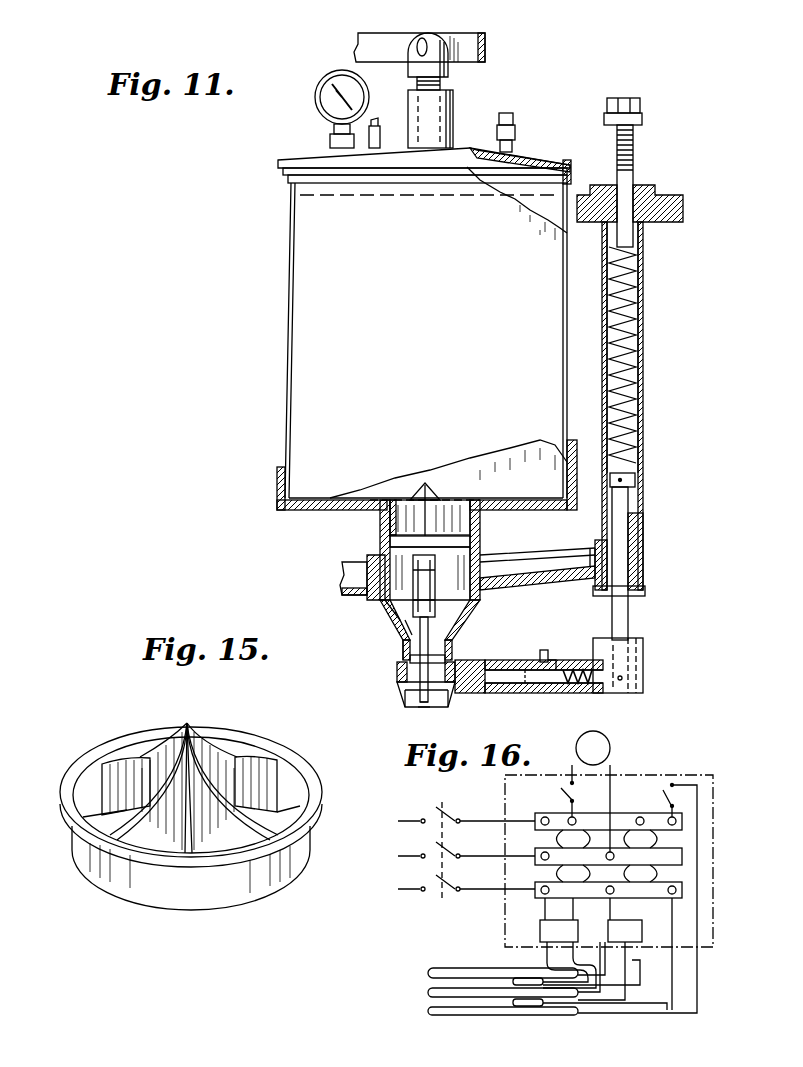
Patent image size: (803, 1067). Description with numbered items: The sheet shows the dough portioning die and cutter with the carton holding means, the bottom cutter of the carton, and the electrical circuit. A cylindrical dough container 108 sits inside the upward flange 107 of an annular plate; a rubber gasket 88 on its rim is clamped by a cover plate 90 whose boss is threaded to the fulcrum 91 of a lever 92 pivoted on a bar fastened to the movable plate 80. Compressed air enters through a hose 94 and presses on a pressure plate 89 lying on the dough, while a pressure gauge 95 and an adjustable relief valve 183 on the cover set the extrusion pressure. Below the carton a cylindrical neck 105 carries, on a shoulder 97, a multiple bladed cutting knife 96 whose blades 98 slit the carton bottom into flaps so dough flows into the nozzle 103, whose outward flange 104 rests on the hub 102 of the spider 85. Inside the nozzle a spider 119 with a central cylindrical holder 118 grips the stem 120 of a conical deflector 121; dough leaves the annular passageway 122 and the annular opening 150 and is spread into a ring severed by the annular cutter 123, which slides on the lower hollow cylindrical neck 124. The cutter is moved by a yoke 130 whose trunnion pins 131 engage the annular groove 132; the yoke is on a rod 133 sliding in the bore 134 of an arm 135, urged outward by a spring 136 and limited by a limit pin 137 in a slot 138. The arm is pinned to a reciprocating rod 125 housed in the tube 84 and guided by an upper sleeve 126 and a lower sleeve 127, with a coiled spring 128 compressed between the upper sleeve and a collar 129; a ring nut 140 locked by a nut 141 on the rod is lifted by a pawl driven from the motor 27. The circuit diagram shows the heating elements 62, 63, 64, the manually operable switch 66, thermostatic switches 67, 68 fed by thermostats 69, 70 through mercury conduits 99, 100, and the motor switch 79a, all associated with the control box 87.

In FIG. 11, the fulcrum 91 is at (434, 36).
In FIG. 11, the lever 92 is at (486, 46).
In FIG. 11, the pressure gauge 95 is at (314, 105).
In FIG. 11, the hose 94 is at (380, 120).
In FIG. 11, the relief valve 183 is at (515, 120).
In FIG. 11, the cover plate 90 is at (287, 158).
In FIG. 11, the rubber gasket 88 is at (571, 170).
In FIG. 11, the dough container 108 is at (312, 378).
In FIG. 11, the pressure plate 89 is at (510, 218).
In FIG. 11, the upward flange 107 is at (573, 478).
In FIG. 11, the multiple bladed cutting knife 96 is at (442, 494).
In FIG. 15, the multiple bladed cutting knife 96 is at (330, 794).
In FIG. 11, the cylindrical neck 105 is at (380, 518).
In FIG. 11, the shoulder 97 is at (376, 540).
In FIG. 11, the outward flange 104 is at (476, 546).
In FIG. 11, the hub 102 is at (482, 560).
In FIG. 11, the nozzle 103 is at (455, 608).
In FIG. 11, the central cylindrical holder 118 is at (482, 570).
In FIG. 11, the spider 85 is at (562, 565).
In FIG. 11, the spider 119 is at (390, 604).
In FIG. 11, the stem 120 is at (398, 620).
In FIG. 11, the lower hollow cylindrical neck 124 is at (400, 645).
In FIG. 11, the annular passageway 122 is at (450, 656).
In FIG. 11, the annular groove 132 is at (396, 676).
In FIG. 11, the annular cutter 123 is at (398, 690).
In FIG. 11, the annular opening 150 is at (400, 708).
In FIG. 11, the trunnion pins 131 is at (418, 704).
In FIG. 11, the conical deflector 121 is at (436, 708).
In FIG. 11, the yoke 130 is at (470, 694).
In FIG. 11, the rod 133 is at (500, 660).
In FIG. 11, the bore 134 is at (520, 694).
In FIG. 11, the spring 136 is at (575, 694).
In FIG. 11, the limit pin 137 is at (548, 652).
In FIG. 11, the slot 138 is at (556, 664).
In FIG. 11, the plate 80 is at (683, 196).
In FIG. 11, the nut 141 is at (640, 104).
In FIG. 11, the ring nut 140 is at (642, 120).
In FIG. 11, the upper sleeve 126 is at (643, 244).
In FIG. 11, the coiled spring 128 is at (636, 304).
In FIG. 11, the tube 84 is at (643, 448).
In FIG. 11, the collar 129 is at (636, 480).
In FIG. 11, the reciprocating rod 125 is at (630, 630).
In FIG. 11, the lower sleeve 127 is at (643, 590).
In FIG. 11, the arm 135 is at (630, 692).
In FIG. 15, the blades 98 is at (148, 765).
In FIG. 16, the motor 27 is at (610, 748).
In FIG. 16, the control box 87 is at (713, 826).
In FIG. 16, the motor switch 79a is at (566, 794).
In FIG. 16, the manually operable switch 66 is at (674, 782).
In FIG. 16, the thermostatic switch 67 is at (540, 930).
In FIG. 16, the thermostatic switch 68 is at (642, 935).
In FIG. 16, the thermostat 69 is at (518, 978).
In FIG. 16, the heating element 63 is at (428, 973).
In FIG. 16, the heating element 64 is at (428, 993).
In FIG. 16, the heating element 62 is at (430, 1012).
In FIG. 16, the thermostat 70 is at (525, 1006).
In FIG. 16, the mercury conduit 99 is at (606, 970).
In FIG. 16, the mercury conduit 100 is at (640, 985).